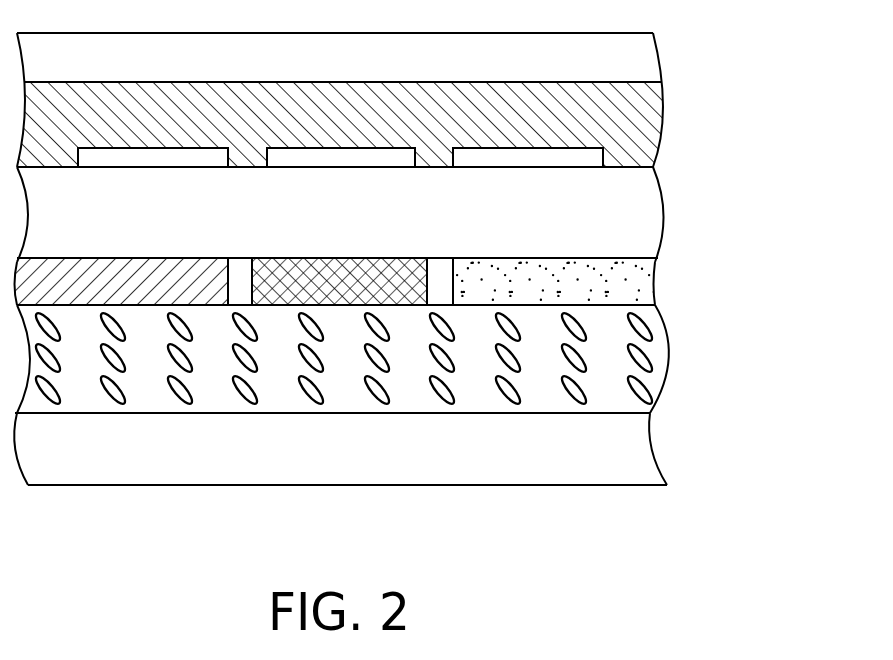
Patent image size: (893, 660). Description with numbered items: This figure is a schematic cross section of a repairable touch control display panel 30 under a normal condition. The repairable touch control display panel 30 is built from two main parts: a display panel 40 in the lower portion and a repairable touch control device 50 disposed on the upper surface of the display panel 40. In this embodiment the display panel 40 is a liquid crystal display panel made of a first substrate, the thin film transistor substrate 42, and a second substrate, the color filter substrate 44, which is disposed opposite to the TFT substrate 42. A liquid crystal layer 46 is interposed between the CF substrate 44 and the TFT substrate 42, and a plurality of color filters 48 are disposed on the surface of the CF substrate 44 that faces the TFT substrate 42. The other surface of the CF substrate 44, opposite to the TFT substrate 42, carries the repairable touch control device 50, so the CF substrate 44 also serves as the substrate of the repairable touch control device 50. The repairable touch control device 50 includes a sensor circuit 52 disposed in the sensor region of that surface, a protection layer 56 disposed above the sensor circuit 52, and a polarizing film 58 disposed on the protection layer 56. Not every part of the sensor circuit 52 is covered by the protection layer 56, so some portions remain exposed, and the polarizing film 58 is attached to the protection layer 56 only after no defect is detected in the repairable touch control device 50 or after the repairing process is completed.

The repairable touch control display panel 30 is at (808, 53).
The display panel 40 is at (740, 487).
The thin film transistor substrate 42 is at (636, 466).
The color filter substrate 44 is at (640, 210).
The liquid crystal layer 46 is at (640, 398).
The color filters 48 is at (645, 293).
The repairable touch control device 50 is at (737, 22).
The sensor circuit 52 is at (593, 157).
The protection layer 56 is at (640, 110).
The polarizing film 58 is at (640, 56).